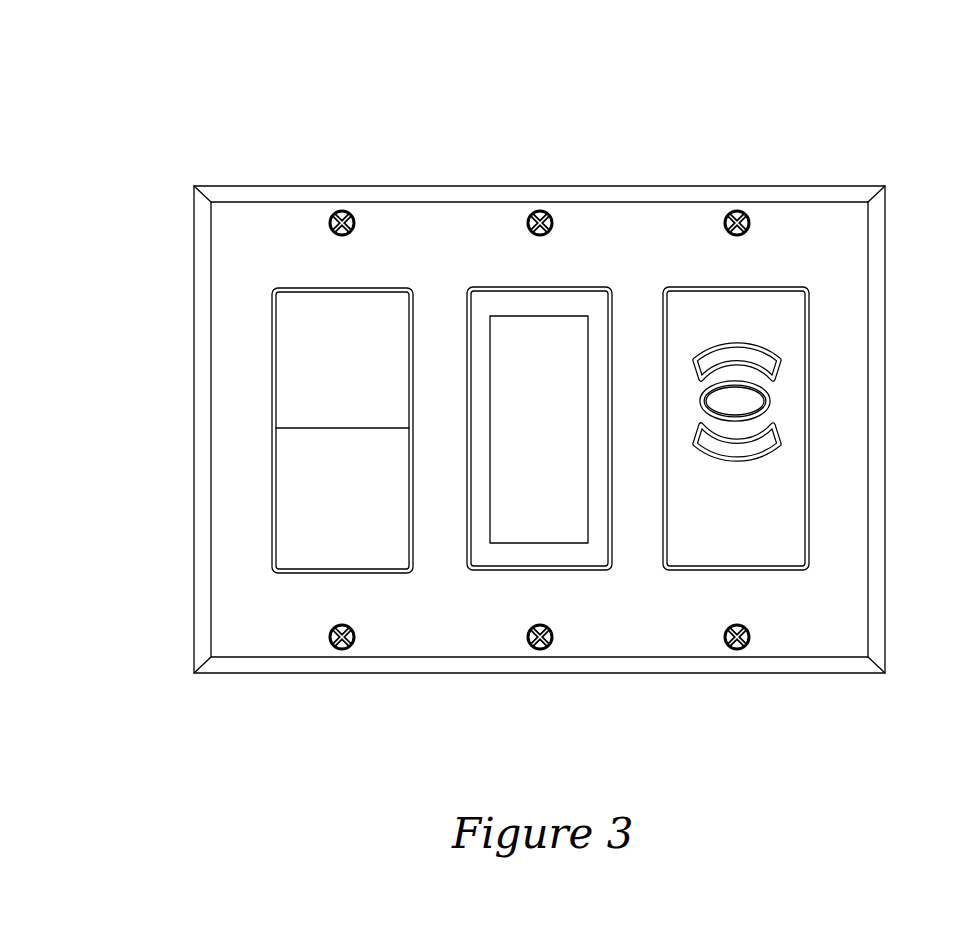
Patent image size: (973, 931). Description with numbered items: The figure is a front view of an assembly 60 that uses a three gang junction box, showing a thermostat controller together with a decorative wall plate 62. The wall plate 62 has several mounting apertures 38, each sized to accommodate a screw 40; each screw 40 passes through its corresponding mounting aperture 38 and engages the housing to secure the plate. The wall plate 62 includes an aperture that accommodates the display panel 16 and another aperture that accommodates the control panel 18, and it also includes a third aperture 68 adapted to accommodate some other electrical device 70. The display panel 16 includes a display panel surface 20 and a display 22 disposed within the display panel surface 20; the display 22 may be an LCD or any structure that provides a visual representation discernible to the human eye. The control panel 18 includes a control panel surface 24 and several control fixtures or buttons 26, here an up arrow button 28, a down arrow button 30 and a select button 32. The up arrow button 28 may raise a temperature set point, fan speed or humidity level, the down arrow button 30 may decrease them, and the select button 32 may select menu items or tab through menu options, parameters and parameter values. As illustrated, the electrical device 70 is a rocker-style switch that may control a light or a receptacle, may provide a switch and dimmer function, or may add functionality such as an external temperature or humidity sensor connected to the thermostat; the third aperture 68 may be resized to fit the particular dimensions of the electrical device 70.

The assembly 60 is at (660, 106).
The wall plate 62 is at (843, 509).
The mounting aperture 38 is at (338, 211).
The screw 40 is at (345, 211).
The third aperture 68 is at (283, 288).
The electrical device 70 is at (292, 331).
The display panel 16 is at (575, 308).
The display panel surface 20 is at (497, 555).
The display 22 is at (565, 520).
The control panel 18 is at (775, 323).
The control panel surface 24 is at (785, 552).
The up arrow button 28 is at (768, 357).
The buttons 26 is at (772, 392).
The select button 32 is at (768, 405).
The down arrow button 30 is at (773, 445).